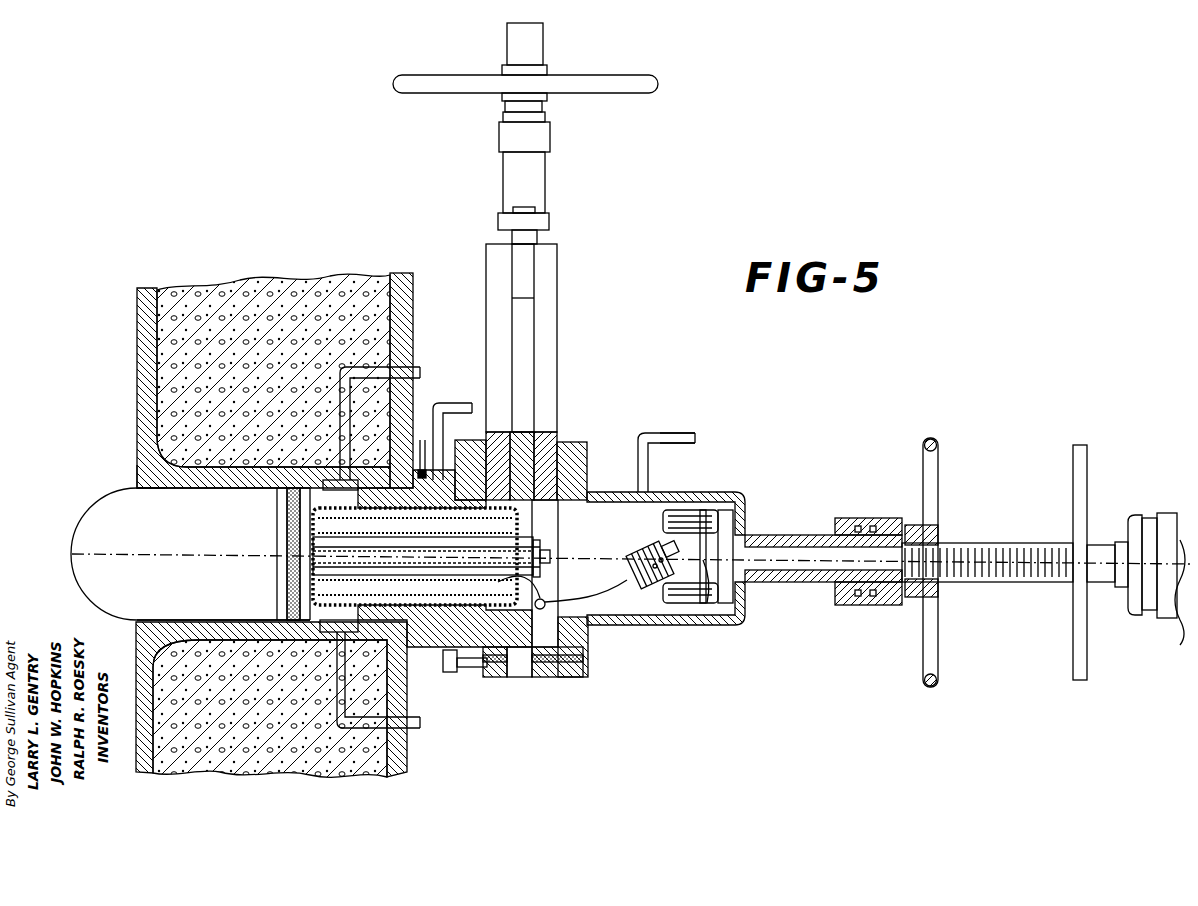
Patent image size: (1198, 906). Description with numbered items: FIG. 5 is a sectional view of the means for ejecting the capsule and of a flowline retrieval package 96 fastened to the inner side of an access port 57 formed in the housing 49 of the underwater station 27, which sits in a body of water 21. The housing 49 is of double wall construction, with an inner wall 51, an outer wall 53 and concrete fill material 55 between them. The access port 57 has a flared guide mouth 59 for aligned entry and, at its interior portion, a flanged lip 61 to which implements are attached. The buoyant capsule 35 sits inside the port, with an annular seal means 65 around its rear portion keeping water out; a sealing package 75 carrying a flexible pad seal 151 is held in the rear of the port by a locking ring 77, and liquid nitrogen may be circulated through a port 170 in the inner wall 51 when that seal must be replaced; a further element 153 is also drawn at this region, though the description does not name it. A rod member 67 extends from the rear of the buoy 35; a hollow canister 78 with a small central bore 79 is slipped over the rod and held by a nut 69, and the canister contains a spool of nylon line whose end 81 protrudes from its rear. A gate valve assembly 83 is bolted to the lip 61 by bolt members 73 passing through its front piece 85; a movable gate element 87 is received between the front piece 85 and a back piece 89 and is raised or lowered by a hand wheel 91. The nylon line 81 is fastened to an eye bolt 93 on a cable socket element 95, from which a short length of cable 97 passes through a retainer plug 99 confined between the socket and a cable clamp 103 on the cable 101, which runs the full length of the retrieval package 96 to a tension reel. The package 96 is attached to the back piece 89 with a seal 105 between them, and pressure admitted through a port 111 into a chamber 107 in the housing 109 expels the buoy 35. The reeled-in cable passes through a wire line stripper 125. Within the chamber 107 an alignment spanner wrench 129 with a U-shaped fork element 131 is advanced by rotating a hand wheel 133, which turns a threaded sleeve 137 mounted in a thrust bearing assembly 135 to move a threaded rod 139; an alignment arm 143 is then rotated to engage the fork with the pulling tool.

The body of water 21 is at (106, 368).
The underwater station 27 is at (727, 201).
The buoyant capsule 35 is at (140, 539).
The housing 49 is at (321, 247).
The inner shell or wall 51 is at (390, 278).
The outer shell or wall 53 is at (137, 296).
The concrete fill material 55 is at (226, 283).
The access port 57 is at (255, 620).
The flared guide mouth 59 is at (140, 467).
The flanged lip 61 is at (465, 440).
The second annular seal means 65 is at (290, 503).
The rod member 67 is at (337, 542).
The nut 69 is at (498, 556).
The bolt members 73 is at (448, 673).
The sealing package 75 is at (421, 440).
The locking ring 77 is at (500, 497).
The hollow canister 78 is at (470, 668).
The central bore 79 is at (567, 497).
The nylon line 81 is at (545, 600).
The gate valve assembly 83 is at (600, 197).
The front piece 85 is at (493, 678).
The movable gate element 87 is at (530, 376).
The back piece 89 is at (557, 314).
The hand wheel 91 is at (458, 60).
The eye bolt 93 is at (510, 678).
The cable socket element 95 is at (620, 628).
The flowline retrieval package 96 is at (791, 467).
The short length of cable 97 is at (640, 598).
The retainer plug 99 is at (660, 590).
The cable 101 is at (706, 605).
The cable clamp 103 is at (703, 517).
The seal 105 is at (553, 678).
The chamber 107 is at (642, 535).
The housing 109 is at (649, 490).
The port 111 is at (676, 432).
The wire line stripper 125 is at (1135, 510).
The alignment spanner wrench 129 is at (727, 527).
The U-shaped fork element 131 is at (703, 510).
The hand wheel 133 is at (945, 427).
The thrust bearing assembly 135 is at (877, 505).
The threaded sleeve 137 is at (876, 604).
The threaded rod 139 is at (790, 579).
The alignment arm 143 is at (1075, 448).
The pad seal 151 is at (400, 613).
The upper pipe 153 is at (443, 403).
The port 170 is at (421, 366).